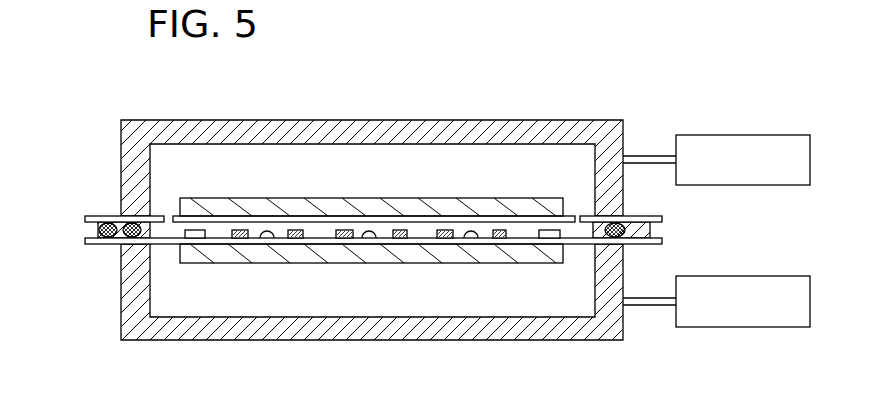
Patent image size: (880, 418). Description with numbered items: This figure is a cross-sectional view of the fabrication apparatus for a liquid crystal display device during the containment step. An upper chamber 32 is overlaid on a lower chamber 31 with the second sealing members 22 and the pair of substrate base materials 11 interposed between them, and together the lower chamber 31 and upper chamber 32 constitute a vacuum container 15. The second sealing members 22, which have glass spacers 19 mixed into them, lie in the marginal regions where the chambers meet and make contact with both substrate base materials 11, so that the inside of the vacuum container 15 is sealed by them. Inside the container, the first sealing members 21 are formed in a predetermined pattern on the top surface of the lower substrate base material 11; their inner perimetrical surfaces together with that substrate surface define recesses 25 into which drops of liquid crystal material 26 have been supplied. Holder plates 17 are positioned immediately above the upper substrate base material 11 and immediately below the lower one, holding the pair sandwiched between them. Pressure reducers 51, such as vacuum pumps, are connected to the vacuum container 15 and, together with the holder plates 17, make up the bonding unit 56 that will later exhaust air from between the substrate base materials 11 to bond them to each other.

The substrate base material 11 is at (198, 217).
The vacuum container 15 is at (372, 234).
The holder plate 17 is at (398, 205).
The glass spacer 19 is at (128, 240).
The first sealing member 21 is at (295, 240).
The second sealing member 22 is at (97, 231).
The recess 25 is at (253, 231).
The liquid crystal material 26 is at (268, 231).
The lower chamber 31 is at (344, 341).
The upper chamber 32 is at (356, 128).
The pressure reducer 51 is at (763, 135).
The bonding unit 56 is at (506, 205).